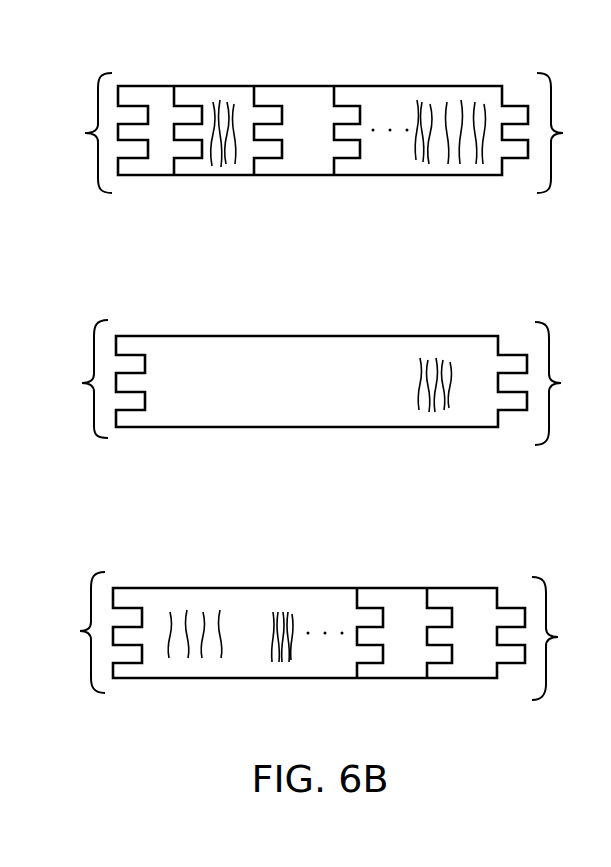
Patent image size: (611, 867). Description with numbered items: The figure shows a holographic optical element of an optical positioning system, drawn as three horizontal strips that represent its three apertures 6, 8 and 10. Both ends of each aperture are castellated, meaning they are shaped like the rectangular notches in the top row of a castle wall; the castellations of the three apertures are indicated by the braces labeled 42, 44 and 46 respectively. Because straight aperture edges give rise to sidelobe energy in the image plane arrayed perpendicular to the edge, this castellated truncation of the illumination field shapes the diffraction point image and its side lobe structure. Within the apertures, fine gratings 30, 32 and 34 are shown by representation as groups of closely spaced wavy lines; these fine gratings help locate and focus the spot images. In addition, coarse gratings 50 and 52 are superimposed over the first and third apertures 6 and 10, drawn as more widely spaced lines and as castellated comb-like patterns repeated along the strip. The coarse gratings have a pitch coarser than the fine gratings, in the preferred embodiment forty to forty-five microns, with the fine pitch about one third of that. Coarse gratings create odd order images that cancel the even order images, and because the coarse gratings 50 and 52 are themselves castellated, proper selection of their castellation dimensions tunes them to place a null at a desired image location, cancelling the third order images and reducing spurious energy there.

The HOE aperture 6 is at (177, 86).
The HOE aperture 8 is at (195, 427).
The HOE aperture 10 is at (175, 678).
The fine grating 30 is at (418, 118).
The fine grating 32 is at (427, 371).
The fine grating 34 is at (272, 636).
The castellations 42 is at (317, 133).
The castellations 44 is at (319, 382).
The castellations 46 is at (320, 636).
The coarse grating 50 is at (477, 118).
The coarse grating 52 is at (187, 612).